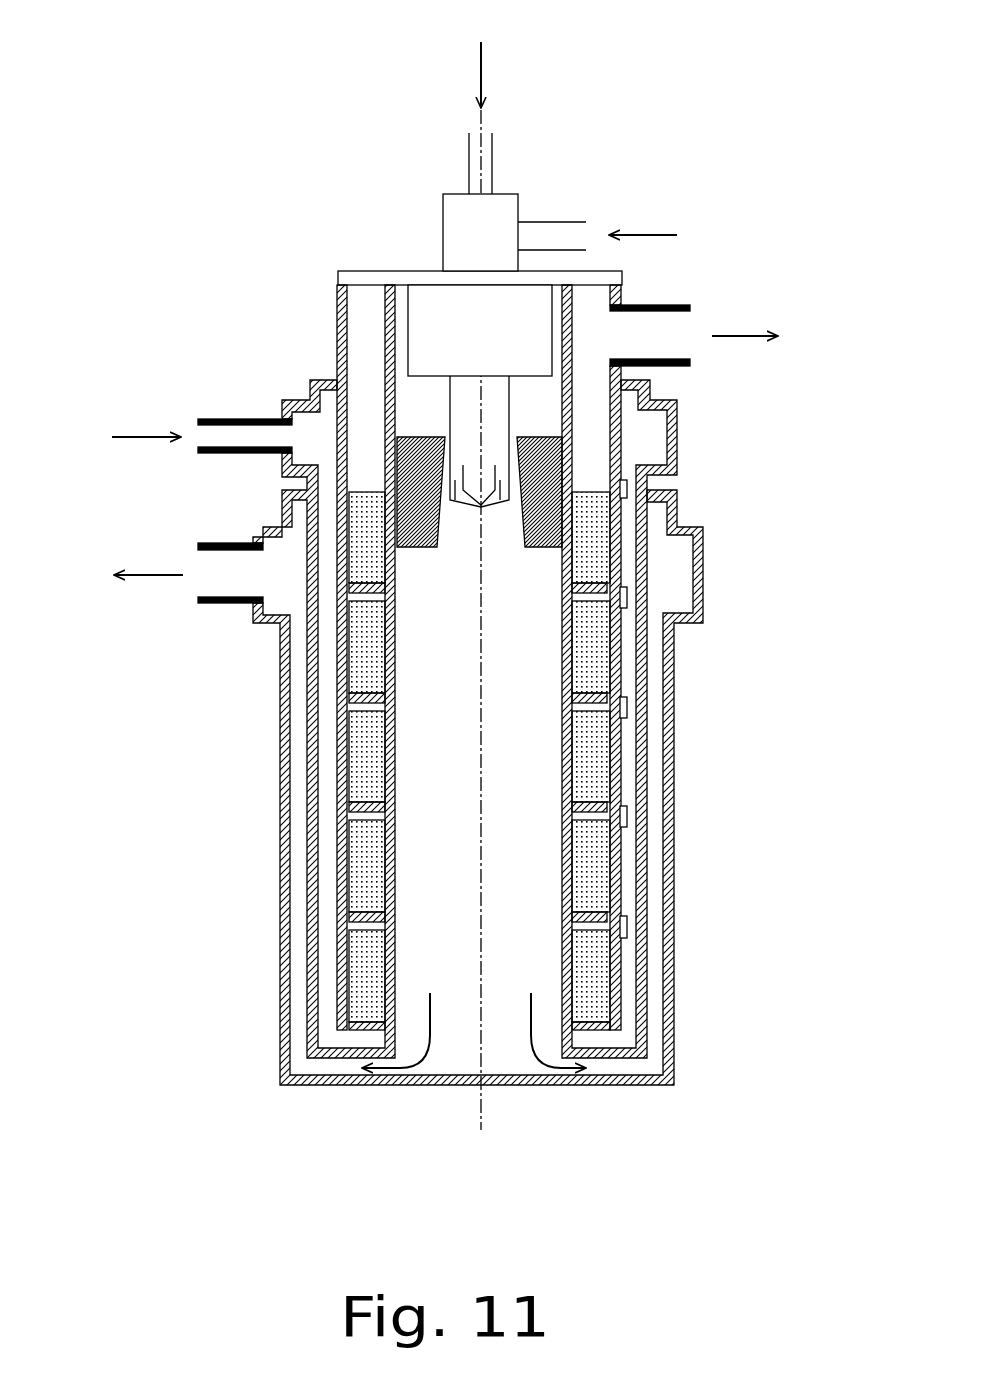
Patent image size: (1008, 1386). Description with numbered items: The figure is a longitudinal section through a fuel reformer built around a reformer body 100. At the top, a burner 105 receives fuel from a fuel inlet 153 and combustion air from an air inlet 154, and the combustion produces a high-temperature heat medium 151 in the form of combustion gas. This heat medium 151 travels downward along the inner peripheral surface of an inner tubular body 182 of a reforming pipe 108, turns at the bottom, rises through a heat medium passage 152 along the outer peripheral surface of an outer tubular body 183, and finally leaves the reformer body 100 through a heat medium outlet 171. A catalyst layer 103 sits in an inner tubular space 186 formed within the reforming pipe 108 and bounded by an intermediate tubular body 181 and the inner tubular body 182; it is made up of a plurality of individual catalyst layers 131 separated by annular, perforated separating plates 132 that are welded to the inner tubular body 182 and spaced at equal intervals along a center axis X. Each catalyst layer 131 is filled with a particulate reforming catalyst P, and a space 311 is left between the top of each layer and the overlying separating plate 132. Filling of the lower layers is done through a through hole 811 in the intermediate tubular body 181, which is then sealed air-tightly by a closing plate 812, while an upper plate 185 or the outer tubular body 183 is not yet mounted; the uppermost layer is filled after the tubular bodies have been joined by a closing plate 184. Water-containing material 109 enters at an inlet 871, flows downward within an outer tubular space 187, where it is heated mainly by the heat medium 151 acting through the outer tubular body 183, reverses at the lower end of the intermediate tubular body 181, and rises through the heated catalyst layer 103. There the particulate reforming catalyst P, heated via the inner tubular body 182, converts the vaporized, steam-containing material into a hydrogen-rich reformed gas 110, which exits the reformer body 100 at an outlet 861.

The reformer body 100 is at (196, 146).
The catalyst layer 103 is at (370, 451).
The burner 105 is at (513, 191).
The reforming pipe 108 is at (337, 317).
The material gas 109 is at (146, 440).
The reformed gas 110 is at (733, 337).
The catalyst layer 131 is at (357, 853).
The separating plate 132 is at (357, 808).
The heat medium 151 is at (453, 1057).
The heat medium passage 152 is at (295, 979).
The fuel inlet 153 is at (480, 147).
The air inlet 154 is at (562, 235).
The heat medium outlet 171 is at (213, 604).
The intermediate tubular body 181 is at (623, 443).
The inner tubular body 182 is at (573, 425).
The outer tubular body 183 is at (650, 487).
The closing plate 184 is at (335, 1058).
The upper plate 185 is at (362, 280).
The inner tubular space 186 is at (363, 338).
The outer tubular space 187 is at (327, 718).
The space 311 is at (590, 929).
The through hole 811 is at (625, 922).
The closing plate 812 is at (625, 932).
The outlet 861 is at (690, 305).
The inlet 871 is at (213, 455).
The particulate reforming catalyst P is at (357, 892).
The center axis X is at (477, 1105).